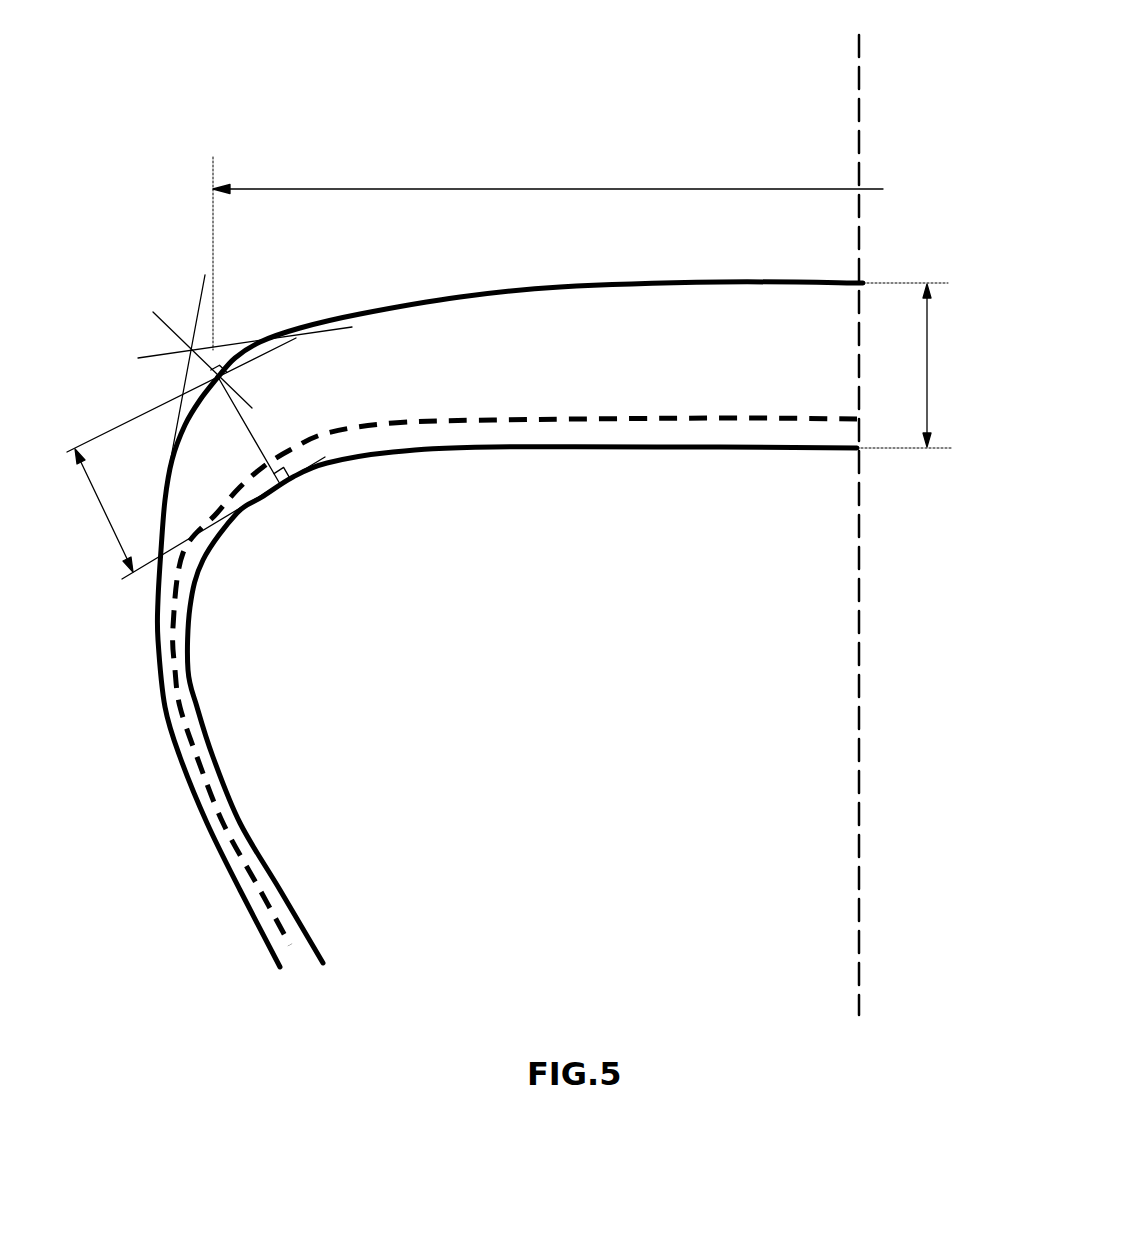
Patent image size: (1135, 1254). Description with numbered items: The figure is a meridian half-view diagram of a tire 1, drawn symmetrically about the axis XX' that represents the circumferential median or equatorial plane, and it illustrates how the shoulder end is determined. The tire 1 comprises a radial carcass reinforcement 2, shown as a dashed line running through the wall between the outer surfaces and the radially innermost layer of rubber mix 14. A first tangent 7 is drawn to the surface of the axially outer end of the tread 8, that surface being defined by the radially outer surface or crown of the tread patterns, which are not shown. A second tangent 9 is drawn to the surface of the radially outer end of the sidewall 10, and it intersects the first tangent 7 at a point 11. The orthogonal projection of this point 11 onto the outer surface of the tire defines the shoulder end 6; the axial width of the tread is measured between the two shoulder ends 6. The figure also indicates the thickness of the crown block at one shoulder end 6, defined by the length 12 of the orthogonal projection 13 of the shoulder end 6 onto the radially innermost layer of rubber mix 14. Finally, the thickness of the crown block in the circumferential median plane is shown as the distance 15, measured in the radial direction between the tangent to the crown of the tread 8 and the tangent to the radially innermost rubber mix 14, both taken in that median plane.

The tire 1 is at (90, 329).
The radial carcass reinforcement 2 is at (192, 742).
The shoulder end 6 is at (225, 380).
The first tangent 7 is at (138, 360).
The tread 8 is at (500, 290).
The second tangent 9 is at (200, 302).
The sidewall 10 is at (158, 622).
The point 11 is at (205, 340).
The length 12 is at (107, 517).
The orthogonal projection 13 is at (243, 420).
The radially innermost layer of rubber mix 14 is at (378, 456).
The distance 15 is at (927, 358).